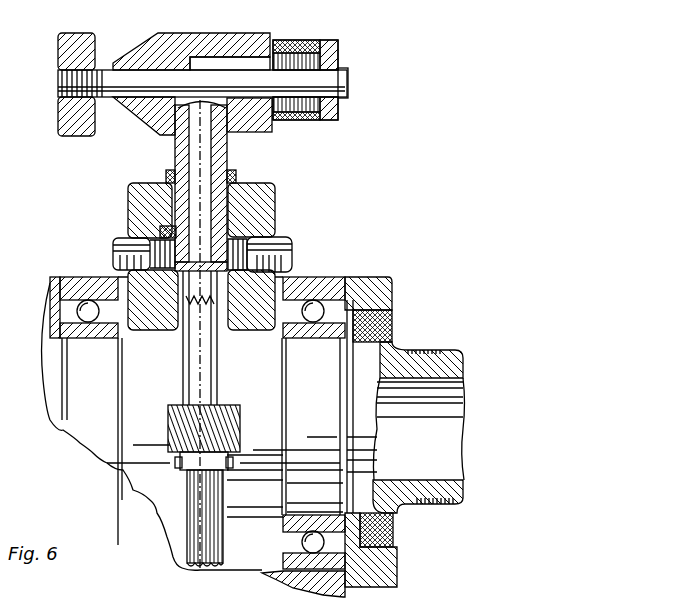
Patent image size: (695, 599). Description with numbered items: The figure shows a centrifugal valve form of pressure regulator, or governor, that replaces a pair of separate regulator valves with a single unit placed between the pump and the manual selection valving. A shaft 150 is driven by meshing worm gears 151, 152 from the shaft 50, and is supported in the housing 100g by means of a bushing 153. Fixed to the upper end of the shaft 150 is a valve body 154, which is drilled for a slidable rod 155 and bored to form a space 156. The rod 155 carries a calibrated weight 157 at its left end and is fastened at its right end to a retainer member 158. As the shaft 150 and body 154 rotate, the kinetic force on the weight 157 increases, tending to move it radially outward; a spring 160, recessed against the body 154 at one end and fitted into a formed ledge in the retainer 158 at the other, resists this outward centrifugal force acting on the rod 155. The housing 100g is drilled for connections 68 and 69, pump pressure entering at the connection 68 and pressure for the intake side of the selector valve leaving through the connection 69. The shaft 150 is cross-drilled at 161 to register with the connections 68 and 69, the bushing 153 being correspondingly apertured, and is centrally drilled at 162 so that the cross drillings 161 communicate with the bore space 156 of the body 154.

The slidable rod 155 is at (108, 75).
The calibrated weight 157 is at (80, 128).
The valve body 154 is at (150, 107).
The space 156 is at (252, 100).
The spring 160 is at (338, 52).
The retainer member 158 is at (338, 106).
The shaft 150 is at (183, 152).
The central drilling 162 is at (234, 166).
The bushing 153 is at (255, 204).
The cross drilling 161 is at (170, 236).
The connection 68 is at (120, 252).
The connection 69 is at (282, 248).
The housing 100g is at (260, 228).
The shaft 50 is at (453, 367).
The worm gear 152 is at (183, 418).
The worm gear 151 is at (207, 565).